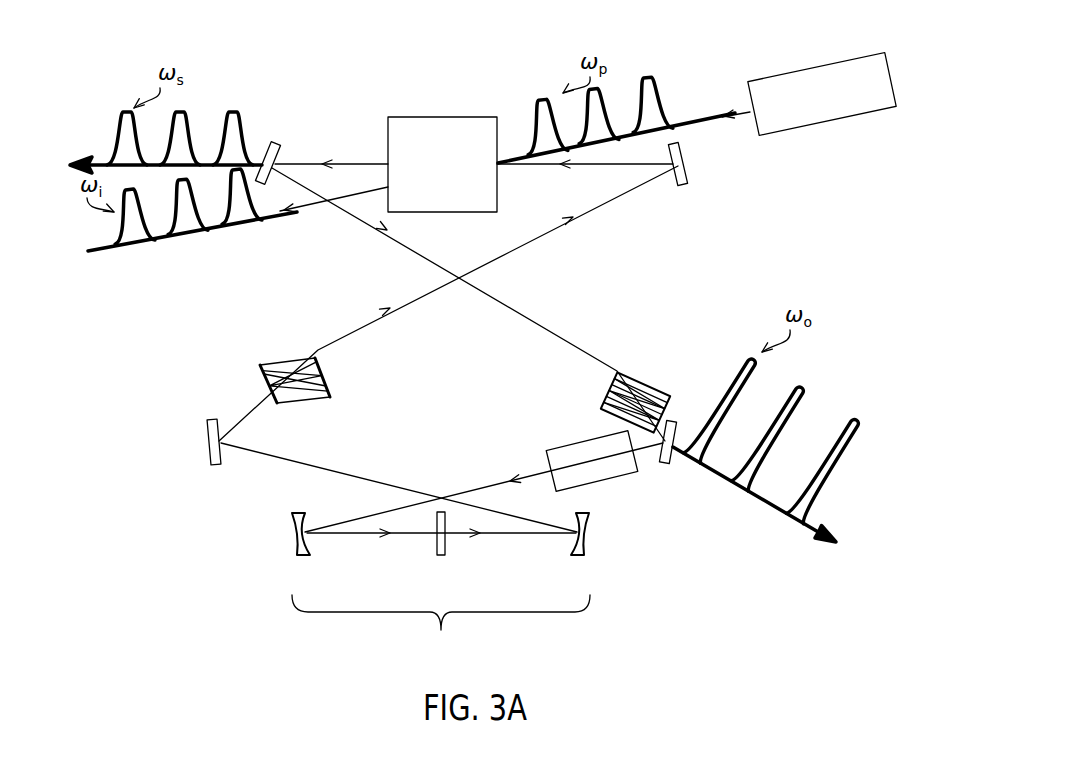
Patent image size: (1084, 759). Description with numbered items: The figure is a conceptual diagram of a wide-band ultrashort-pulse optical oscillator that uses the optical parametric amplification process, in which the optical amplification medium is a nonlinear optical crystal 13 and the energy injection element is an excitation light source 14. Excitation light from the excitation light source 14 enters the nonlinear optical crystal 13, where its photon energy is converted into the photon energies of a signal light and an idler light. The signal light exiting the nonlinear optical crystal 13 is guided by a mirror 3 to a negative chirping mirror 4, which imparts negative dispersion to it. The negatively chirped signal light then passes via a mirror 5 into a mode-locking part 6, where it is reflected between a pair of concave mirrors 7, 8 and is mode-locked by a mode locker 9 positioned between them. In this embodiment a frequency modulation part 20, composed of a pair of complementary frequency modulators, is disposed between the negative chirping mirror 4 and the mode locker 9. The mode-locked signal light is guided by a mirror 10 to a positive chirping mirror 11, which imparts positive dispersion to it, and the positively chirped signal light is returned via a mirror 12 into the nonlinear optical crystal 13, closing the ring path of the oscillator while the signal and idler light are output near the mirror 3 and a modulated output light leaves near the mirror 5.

The mirror 3 is at (272, 140).
The negative chirping mirror 4 is at (651, 377).
The mirror 5 is at (662, 465).
The mode-locking part 6 is at (441, 631).
The concave mirror 7 is at (291, 533).
The concave mirror 8 is at (590, 535).
The mode locker 9 is at (441, 556).
The mirror 10 is at (207, 443).
The positive chirping mirror 11 is at (236, 377).
The mirror 12 is at (690, 170).
The nonlinear optical crystal 13 is at (470, 117).
The excitation light source 14 is at (830, 66).
The frequency modulation part 20 is at (553, 450).